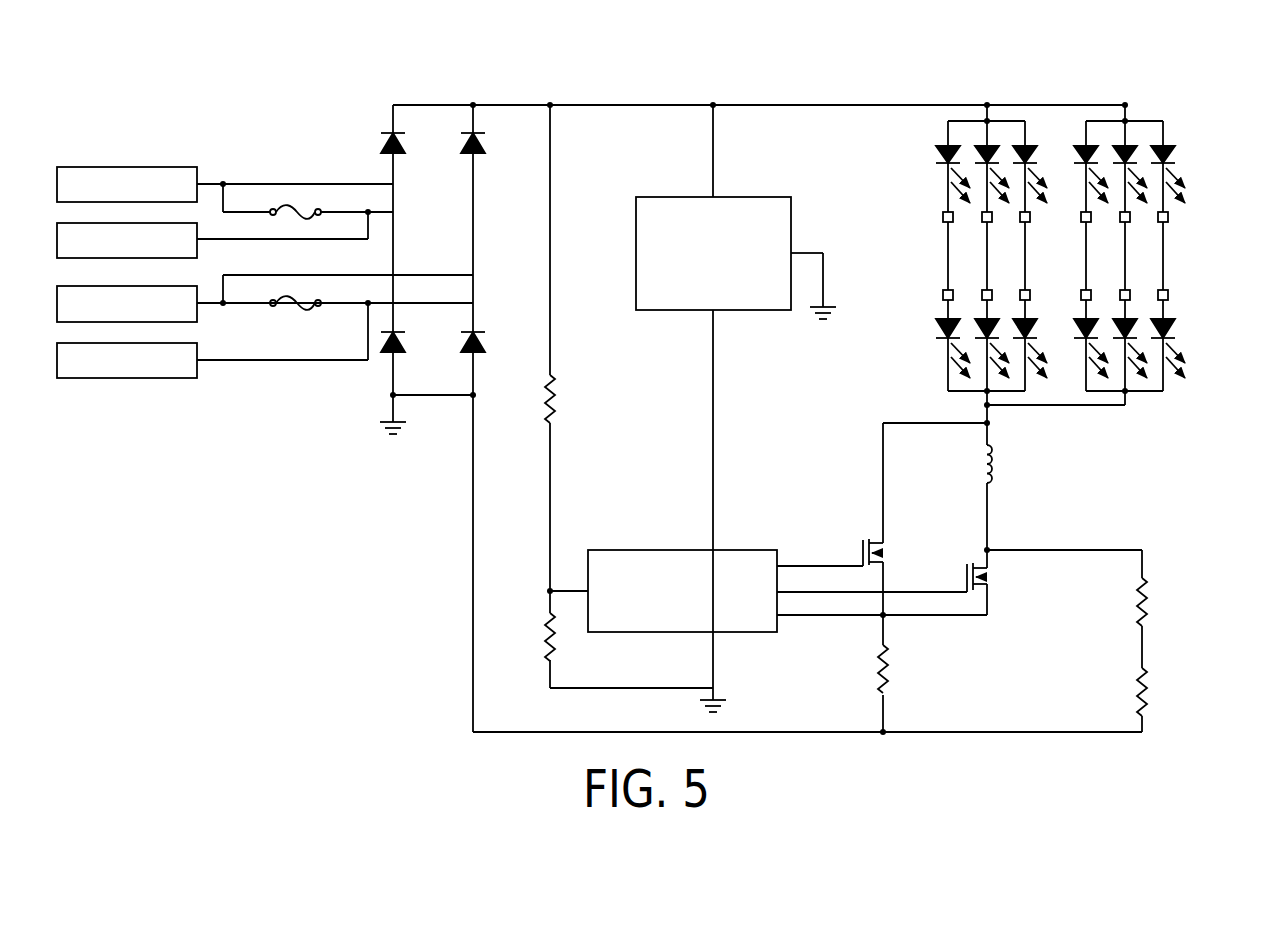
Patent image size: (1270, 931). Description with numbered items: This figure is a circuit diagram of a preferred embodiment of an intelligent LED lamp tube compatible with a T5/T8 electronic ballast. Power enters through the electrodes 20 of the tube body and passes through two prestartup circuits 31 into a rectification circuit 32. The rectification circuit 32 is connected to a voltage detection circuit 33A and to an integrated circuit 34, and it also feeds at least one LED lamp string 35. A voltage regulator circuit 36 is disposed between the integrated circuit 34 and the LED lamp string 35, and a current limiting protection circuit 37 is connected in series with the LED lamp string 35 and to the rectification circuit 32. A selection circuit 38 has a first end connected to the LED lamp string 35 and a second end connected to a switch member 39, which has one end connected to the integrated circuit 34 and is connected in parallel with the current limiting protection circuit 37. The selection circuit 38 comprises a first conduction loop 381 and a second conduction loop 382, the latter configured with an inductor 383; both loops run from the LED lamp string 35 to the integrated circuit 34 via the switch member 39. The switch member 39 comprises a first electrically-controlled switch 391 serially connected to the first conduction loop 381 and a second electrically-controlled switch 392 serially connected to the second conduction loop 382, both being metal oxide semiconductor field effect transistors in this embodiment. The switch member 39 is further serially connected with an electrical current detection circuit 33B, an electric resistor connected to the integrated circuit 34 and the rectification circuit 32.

The electrodes 20 is at (135, 165).
The prestartup circuits 31 is at (298, 202).
The rectification circuit 32 is at (425, 123).
The voltage detection circuit 33A is at (537, 422).
The electrical current detection circuit 33B is at (892, 675).
The integrated circuit 34 is at (688, 557).
The LED lamp string 35 is at (1178, 160).
The voltage regulator circuit 36 is at (748, 197).
The current limiting protection circuit 37 is at (1147, 640).
The selection circuit 38 is at (1000, 428).
The first conduction loop 381 is at (988, 518).
The second conduction loop 382 is at (917, 415).
The inductor 383 is at (997, 465).
The switch member 39 is at (1035, 603).
The first electrically-controlled switch 391 is at (988, 583).
The second electrically-controlled switch 392 is at (868, 527).